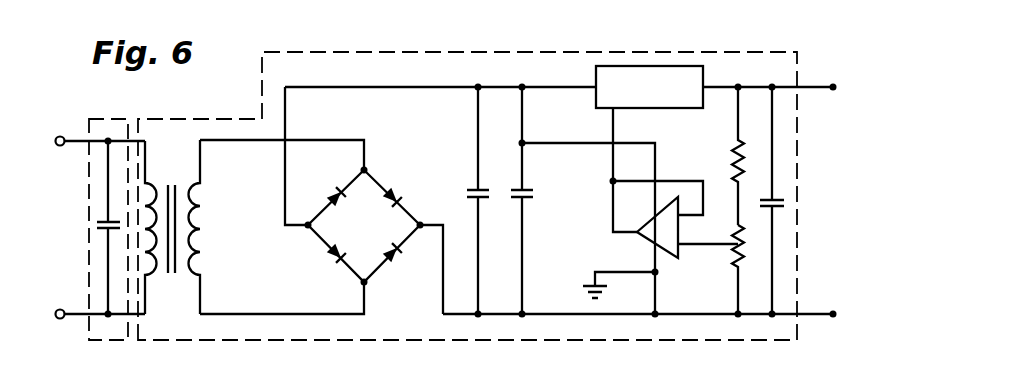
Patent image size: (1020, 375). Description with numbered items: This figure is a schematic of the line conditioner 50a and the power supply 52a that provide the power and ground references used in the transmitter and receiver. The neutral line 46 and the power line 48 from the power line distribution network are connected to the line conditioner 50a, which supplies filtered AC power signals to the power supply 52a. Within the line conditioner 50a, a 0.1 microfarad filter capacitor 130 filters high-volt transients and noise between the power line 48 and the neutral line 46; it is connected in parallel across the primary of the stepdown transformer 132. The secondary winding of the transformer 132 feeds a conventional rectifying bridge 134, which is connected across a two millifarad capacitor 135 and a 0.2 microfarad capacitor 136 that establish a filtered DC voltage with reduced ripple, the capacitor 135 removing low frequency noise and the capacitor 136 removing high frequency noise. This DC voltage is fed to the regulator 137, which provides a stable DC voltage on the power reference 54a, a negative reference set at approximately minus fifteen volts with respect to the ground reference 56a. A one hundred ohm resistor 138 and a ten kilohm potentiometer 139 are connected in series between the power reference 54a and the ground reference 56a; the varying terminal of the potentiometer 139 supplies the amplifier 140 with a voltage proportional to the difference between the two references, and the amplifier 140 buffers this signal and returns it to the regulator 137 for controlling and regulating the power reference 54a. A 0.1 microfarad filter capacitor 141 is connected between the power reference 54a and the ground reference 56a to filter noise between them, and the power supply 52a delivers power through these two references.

The neutral line 46 is at (70, 320).
The power line 48 is at (63, 136).
The line conditioner 50a is at (88, 280).
The power supply 52a is at (428, 53).
The power reference 54a is at (812, 86).
The ground reference 56a is at (812, 313).
The filter capacitor 130 is at (97, 222).
The transformer 132 is at (203, 237).
The rectifying bridge 134 is at (364, 200).
The capacitor 135 is at (467, 192).
The capacitor 136 is at (525, 194).
The regulator 137 is at (623, 66).
The resistor 138 is at (732, 152).
The potentiometer 139 is at (734, 258).
The amplifier 140 is at (637, 241).
The filter capacitor 141 is at (786, 203).